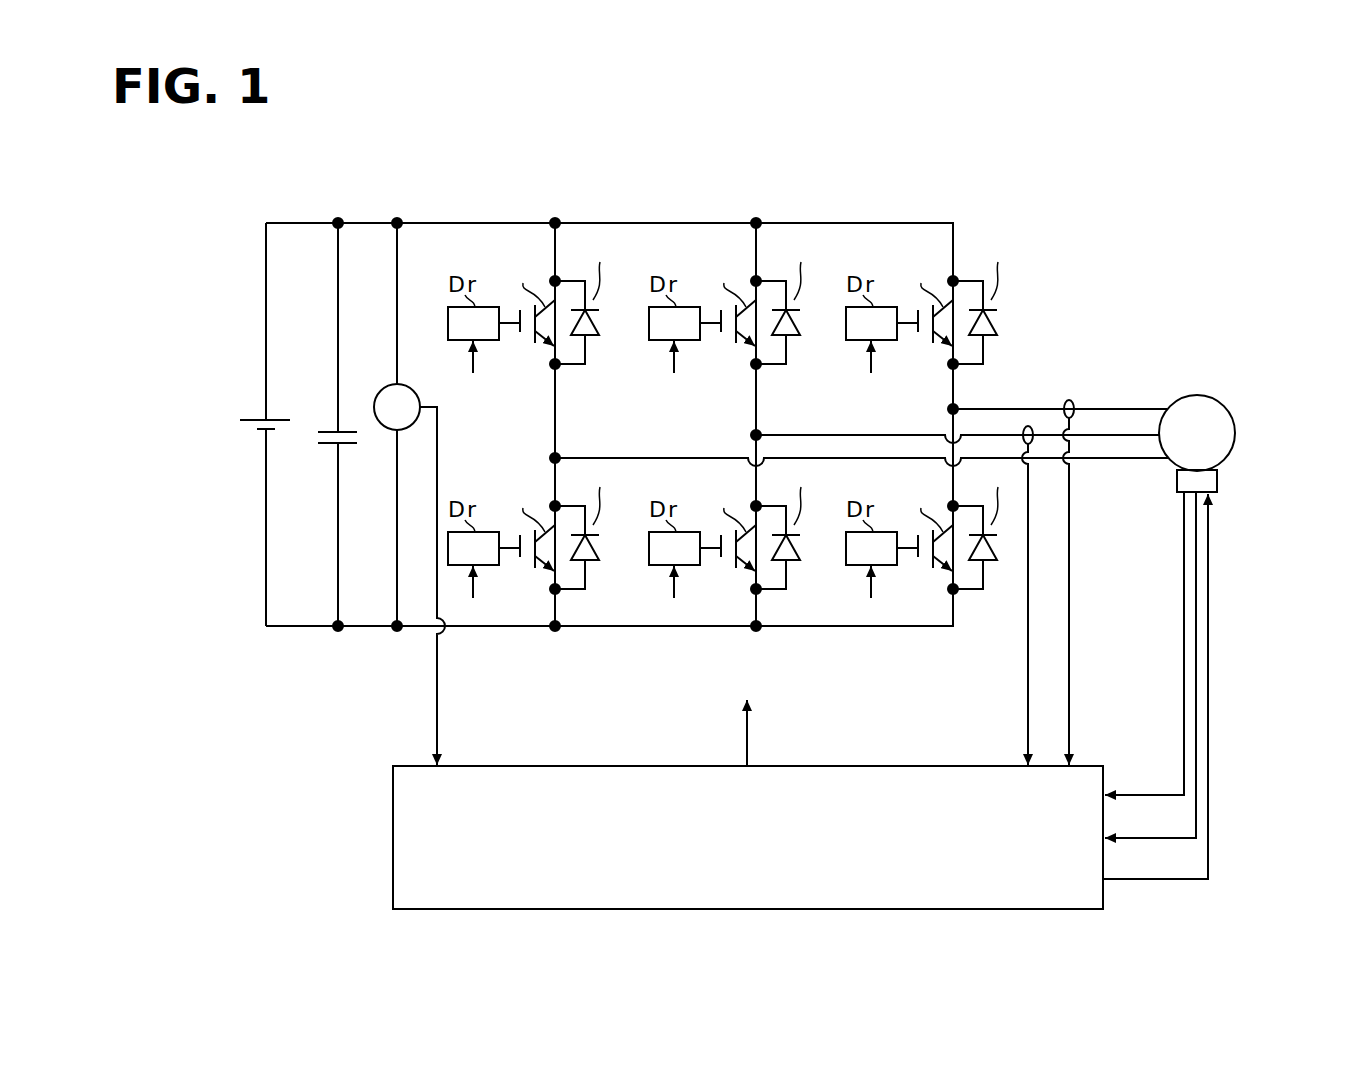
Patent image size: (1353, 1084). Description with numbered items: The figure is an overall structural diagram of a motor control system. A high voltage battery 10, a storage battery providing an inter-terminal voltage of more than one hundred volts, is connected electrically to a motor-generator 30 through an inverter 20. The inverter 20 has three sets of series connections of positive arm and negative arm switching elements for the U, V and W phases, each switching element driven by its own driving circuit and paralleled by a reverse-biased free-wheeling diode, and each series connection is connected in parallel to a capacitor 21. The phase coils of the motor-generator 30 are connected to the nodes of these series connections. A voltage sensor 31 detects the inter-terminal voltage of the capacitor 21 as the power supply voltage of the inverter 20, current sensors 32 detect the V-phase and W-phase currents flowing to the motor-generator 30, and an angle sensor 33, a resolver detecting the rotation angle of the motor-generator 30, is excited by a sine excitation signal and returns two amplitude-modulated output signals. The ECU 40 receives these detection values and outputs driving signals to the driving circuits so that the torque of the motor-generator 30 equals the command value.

The high voltage battery 10 is at (262, 419).
The inverter 20 is at (952, 212).
The capacitor 21 is at (352, 443).
The motor-generator 30 is at (1220, 402).
The voltage sensor 31 is at (383, 387).
The current sensors 32 is at (1068, 400).
The angle sensor 33 is at (1218, 481).
The electronic control unit (ECU) 40 is at (393, 866).